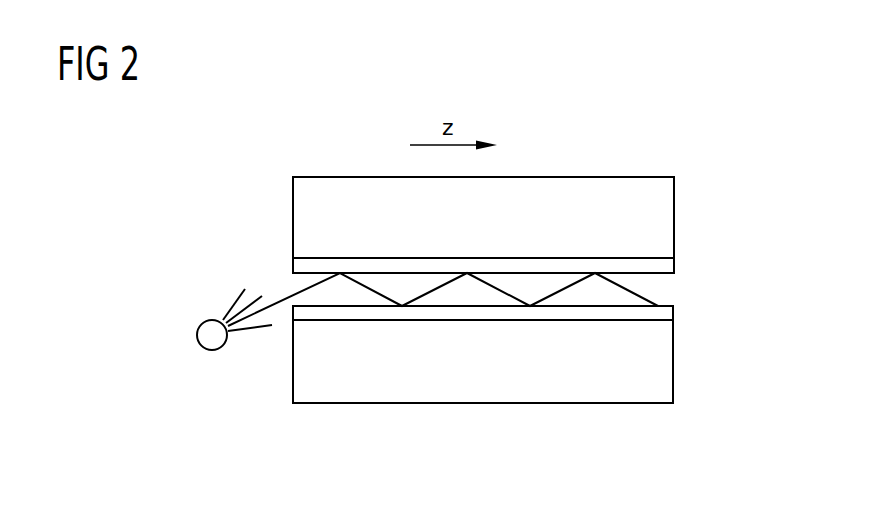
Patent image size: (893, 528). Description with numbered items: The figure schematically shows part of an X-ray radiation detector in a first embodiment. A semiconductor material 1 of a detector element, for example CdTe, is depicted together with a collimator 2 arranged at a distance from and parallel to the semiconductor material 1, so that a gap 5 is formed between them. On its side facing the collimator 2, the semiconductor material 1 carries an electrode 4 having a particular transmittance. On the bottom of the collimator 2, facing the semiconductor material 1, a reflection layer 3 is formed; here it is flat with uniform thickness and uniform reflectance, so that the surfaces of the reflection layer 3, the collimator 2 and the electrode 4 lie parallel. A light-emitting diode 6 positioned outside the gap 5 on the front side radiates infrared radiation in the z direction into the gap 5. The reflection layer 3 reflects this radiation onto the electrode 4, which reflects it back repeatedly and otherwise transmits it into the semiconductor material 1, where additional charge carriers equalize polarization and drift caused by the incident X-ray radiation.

The semiconductor material 1 is at (662, 362).
The collimator 2 is at (663, 215).
The reflection layer 3 is at (663, 270).
The electrode 4 is at (662, 313).
The gap 5 is at (680, 291).
The light-emitting diode 6 is at (198, 336).